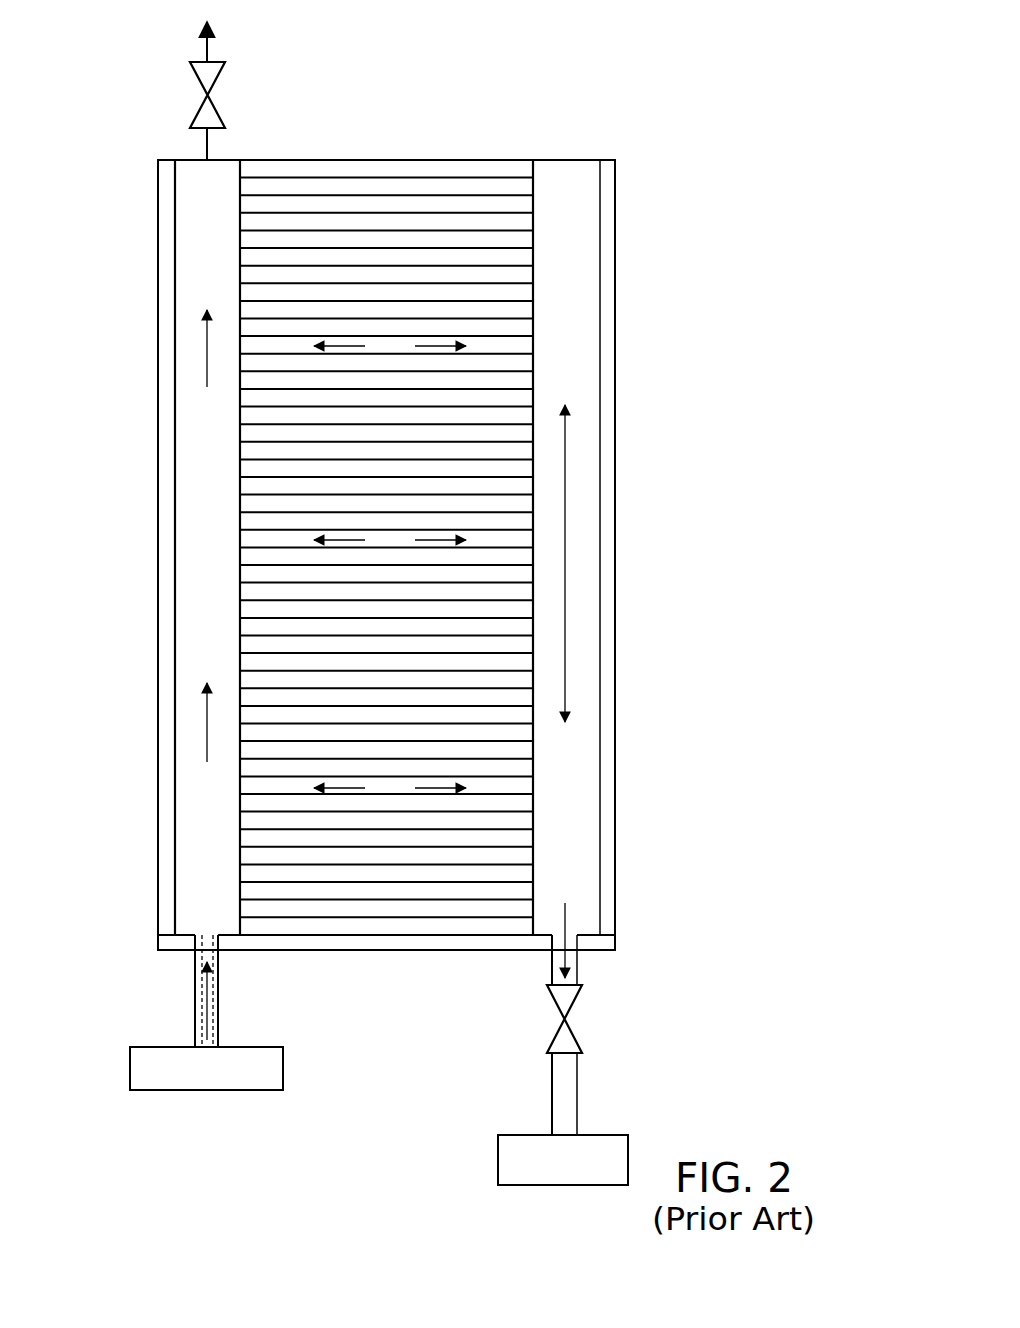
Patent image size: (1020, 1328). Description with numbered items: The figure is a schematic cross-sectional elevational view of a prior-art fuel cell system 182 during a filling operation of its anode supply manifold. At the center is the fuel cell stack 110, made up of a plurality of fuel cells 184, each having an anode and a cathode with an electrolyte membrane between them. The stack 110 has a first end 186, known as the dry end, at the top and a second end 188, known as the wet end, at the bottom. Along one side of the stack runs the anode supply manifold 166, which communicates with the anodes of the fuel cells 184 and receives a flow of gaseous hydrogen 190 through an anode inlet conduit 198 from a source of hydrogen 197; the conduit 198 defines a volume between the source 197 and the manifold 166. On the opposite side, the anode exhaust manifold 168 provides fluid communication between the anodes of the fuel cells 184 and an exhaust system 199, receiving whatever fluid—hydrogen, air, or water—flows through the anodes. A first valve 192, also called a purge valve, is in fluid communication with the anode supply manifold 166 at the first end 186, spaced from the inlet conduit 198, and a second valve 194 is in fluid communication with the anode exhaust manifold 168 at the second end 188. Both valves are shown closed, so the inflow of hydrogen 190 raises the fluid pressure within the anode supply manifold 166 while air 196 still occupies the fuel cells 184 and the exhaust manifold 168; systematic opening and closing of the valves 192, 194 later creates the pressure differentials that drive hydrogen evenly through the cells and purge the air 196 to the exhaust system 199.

The fuel cell stack 110 is at (503, 158).
The anode supply manifold 166 is at (175, 800).
The anode exhaust manifold 168 is at (598, 716).
The fuel cell system 182 is at (745, 168).
The fuel cells 184 is at (247, 222).
The first end 186 is at (414, 160).
The second end 188 is at (393, 950).
The gaseous hydrogen 190 is at (205, 985).
The first valve 192 is at (200, 85).
The second valve 194 is at (575, 1003).
The air 196 is at (207, 340).
The source of hydrogen 197 is at (130, 1070).
The anode inlet conduit 198 is at (218, 1004).
The exhaust system 199 is at (498, 1160).